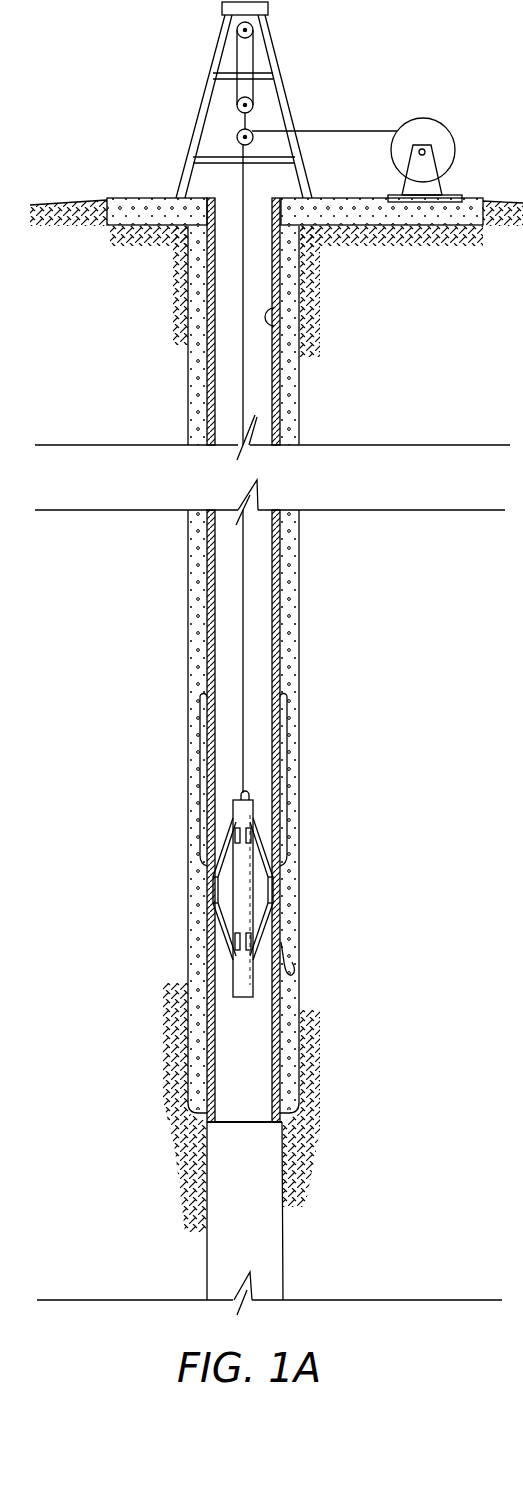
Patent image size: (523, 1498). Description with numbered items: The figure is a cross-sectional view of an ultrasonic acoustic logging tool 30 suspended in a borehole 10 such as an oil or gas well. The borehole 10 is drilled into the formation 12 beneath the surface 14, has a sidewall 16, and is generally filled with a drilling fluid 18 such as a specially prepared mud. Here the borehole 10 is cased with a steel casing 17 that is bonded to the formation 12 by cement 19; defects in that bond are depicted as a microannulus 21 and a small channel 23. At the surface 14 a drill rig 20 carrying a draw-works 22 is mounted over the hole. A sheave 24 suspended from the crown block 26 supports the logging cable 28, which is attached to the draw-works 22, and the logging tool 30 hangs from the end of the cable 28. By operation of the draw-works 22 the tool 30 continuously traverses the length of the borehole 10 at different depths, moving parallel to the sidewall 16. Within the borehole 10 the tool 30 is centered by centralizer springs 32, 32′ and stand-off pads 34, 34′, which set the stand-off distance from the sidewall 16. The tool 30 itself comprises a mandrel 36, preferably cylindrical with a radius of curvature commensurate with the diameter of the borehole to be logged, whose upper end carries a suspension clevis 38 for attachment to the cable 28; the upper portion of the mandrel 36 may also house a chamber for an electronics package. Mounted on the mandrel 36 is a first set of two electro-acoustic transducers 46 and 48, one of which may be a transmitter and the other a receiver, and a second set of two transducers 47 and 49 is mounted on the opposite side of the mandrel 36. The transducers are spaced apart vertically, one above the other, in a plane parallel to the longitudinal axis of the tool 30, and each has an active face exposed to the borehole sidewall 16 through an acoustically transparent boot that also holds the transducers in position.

The borehole 10 is at (218, 188).
The formation 12 is at (400, 300).
The surface 14 is at (472, 200).
The sidewall 16 is at (274, 326).
The steel casing 17 is at (280, 383).
The drilling fluid 18 is at (230, 380).
The cement 19 is at (290, 420).
The drill rig 20 is at (285, 87).
The microannulus 21 is at (287, 770).
The draw-works 22 is at (430, 118).
The small channel 23 is at (292, 965).
The sheave 24 is at (249, 143).
The crown block 26 is at (268, 32).
The logging cable 28 is at (307, 130).
The acoustic logging tool 30 is at (243, 1020).
The centralizer spring 32 is at (223, 922).
The centralizer spring 32′ is at (268, 920).
The stand-off pad 34 is at (215, 892).
The stand-off pad 34′ is at (270, 887).
The mandrel 36 is at (238, 807).
The suspension clevis 38 is at (248, 793).
The electro-acoustic transducer 46 is at (250, 837).
The electro-acoustic transducer 47 is at (237, 837).
The electro-acoustic transducer 48 is at (252, 940).
The electro-acoustic transducer 49 is at (235, 950).